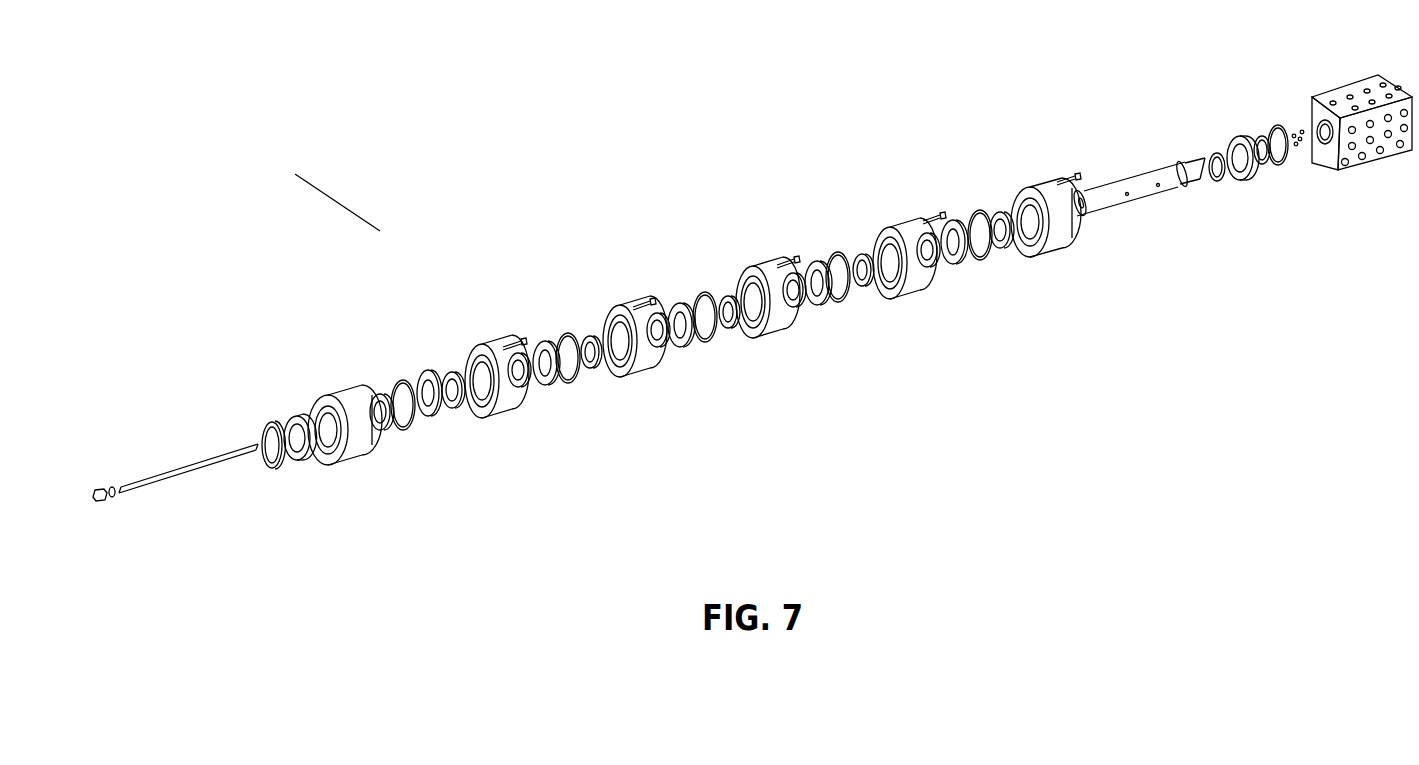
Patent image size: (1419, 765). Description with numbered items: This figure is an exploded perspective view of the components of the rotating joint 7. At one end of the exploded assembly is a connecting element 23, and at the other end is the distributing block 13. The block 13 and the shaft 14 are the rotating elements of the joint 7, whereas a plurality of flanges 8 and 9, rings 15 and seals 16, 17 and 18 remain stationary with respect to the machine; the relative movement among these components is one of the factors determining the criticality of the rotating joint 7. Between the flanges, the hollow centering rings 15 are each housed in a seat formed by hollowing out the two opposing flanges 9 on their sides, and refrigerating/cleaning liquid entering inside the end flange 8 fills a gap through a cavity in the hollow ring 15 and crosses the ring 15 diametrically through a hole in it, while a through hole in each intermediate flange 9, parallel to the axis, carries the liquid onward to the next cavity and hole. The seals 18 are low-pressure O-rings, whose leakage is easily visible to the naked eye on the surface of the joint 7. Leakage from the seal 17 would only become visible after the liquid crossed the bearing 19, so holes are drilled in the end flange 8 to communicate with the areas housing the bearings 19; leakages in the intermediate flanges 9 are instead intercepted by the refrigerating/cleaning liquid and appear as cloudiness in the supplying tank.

The rotating joint 7 is at (380, 231).
The end flange 8 is at (334, 398).
The intermediate flange 9 is at (470, 345).
The distributing block 13 is at (1375, 135).
The shaft 14 is at (1160, 188).
The hollow centering ring 15 is at (432, 415).
The seal 16 is at (457, 408).
The seal 17 is at (378, 396).
The low-pressure seal 18 is at (404, 382).
The bearing 19 is at (293, 418).
The connecting element 23 is at (210, 448).